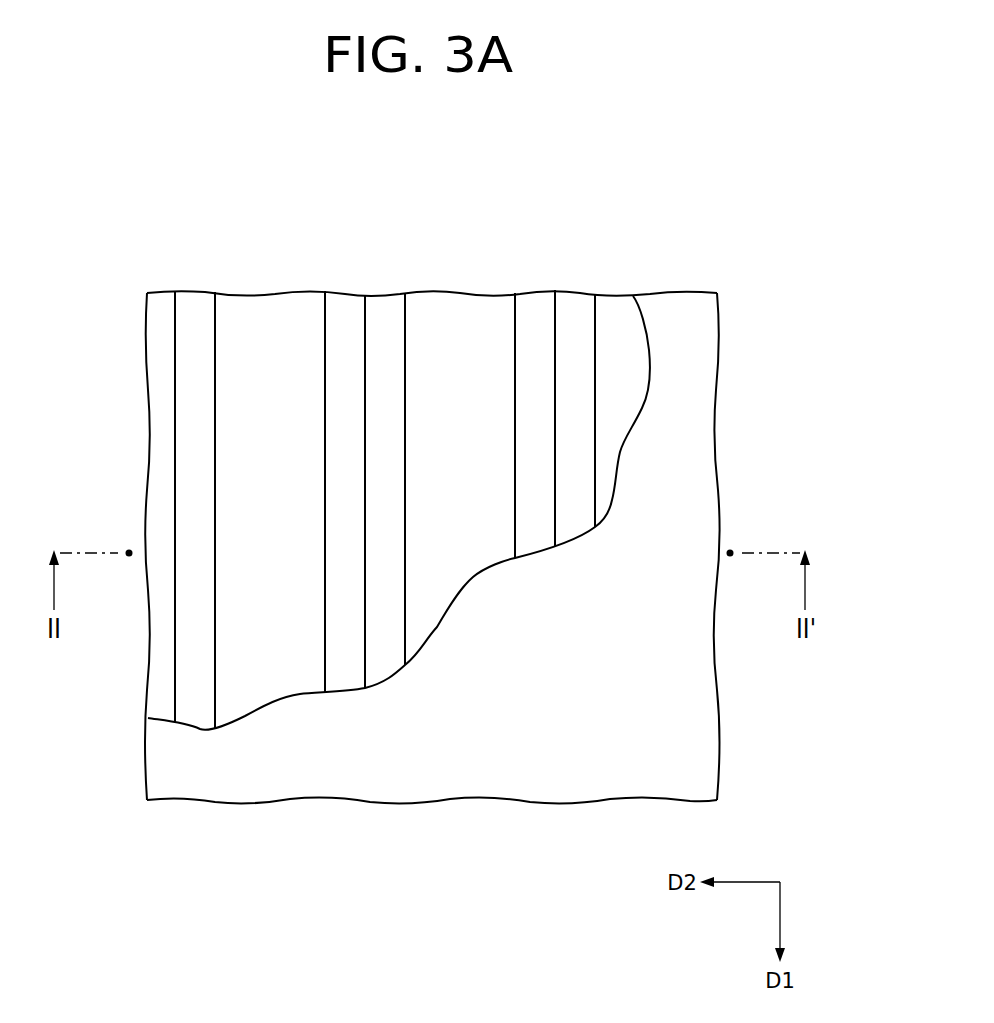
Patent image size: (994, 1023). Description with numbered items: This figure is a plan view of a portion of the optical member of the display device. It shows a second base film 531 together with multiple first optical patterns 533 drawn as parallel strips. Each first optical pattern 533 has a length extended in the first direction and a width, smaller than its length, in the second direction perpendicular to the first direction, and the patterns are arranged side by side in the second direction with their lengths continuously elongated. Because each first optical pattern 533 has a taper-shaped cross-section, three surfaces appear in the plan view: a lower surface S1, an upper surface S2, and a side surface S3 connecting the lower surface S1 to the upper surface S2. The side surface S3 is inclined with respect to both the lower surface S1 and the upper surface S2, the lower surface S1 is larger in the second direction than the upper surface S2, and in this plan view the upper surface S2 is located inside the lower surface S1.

The second base film 531 is at (678, 312).
The first optical patterns 533 is at (234, 450).
The lower surface S1 is at (175, 312).
The upper surface S2 is at (293, 455).
The side surface S3 is at (198, 308).